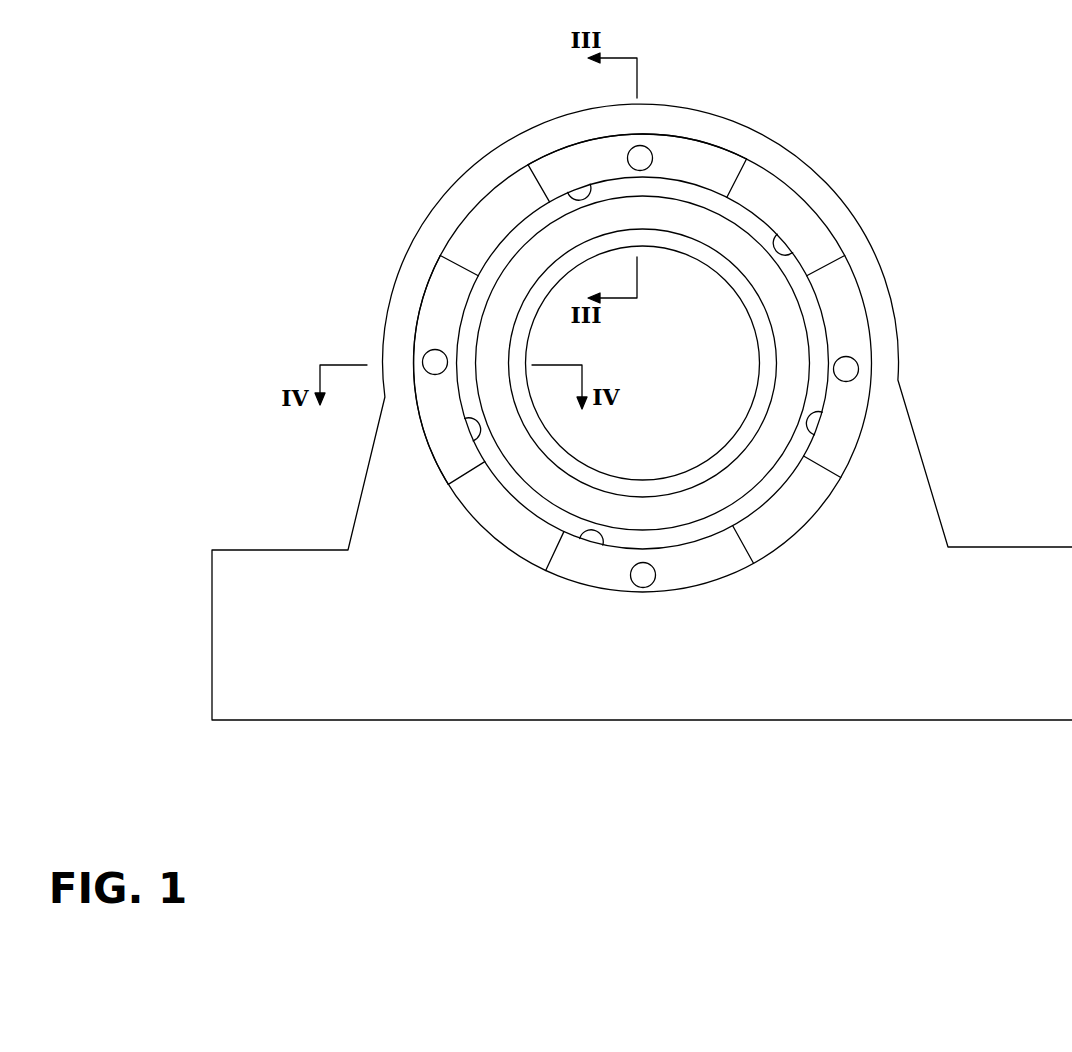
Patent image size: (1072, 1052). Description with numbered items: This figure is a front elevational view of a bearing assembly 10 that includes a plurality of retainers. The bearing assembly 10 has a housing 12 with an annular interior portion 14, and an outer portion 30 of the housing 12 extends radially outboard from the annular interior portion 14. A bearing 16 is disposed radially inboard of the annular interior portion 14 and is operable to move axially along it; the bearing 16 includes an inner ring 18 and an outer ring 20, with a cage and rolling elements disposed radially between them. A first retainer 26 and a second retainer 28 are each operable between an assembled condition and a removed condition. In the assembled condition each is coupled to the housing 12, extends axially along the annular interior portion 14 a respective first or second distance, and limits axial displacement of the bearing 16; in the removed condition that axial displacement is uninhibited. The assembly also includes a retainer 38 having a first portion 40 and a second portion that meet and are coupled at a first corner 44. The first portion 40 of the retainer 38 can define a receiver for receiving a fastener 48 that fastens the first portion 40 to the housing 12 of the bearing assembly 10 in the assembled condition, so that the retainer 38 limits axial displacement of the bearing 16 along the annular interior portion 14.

The bearing assembly 10 is at (642, 404).
The housing 12 is at (762, 150).
The annular interior portion 14 is at (792, 244).
The bearing 16 is at (520, 233).
The inner ring 18 is at (735, 291).
The outer ring 20 is at (500, 253).
The first retainer 26 is at (683, 150).
The second retainer 28 is at (430, 315).
The outer portion 30 is at (528, 140).
The retainer 38 is at (840, 305).
The first portion 40 is at (720, 163).
The first corner 44 is at (580, 194).
The fastener 48 is at (649, 149).